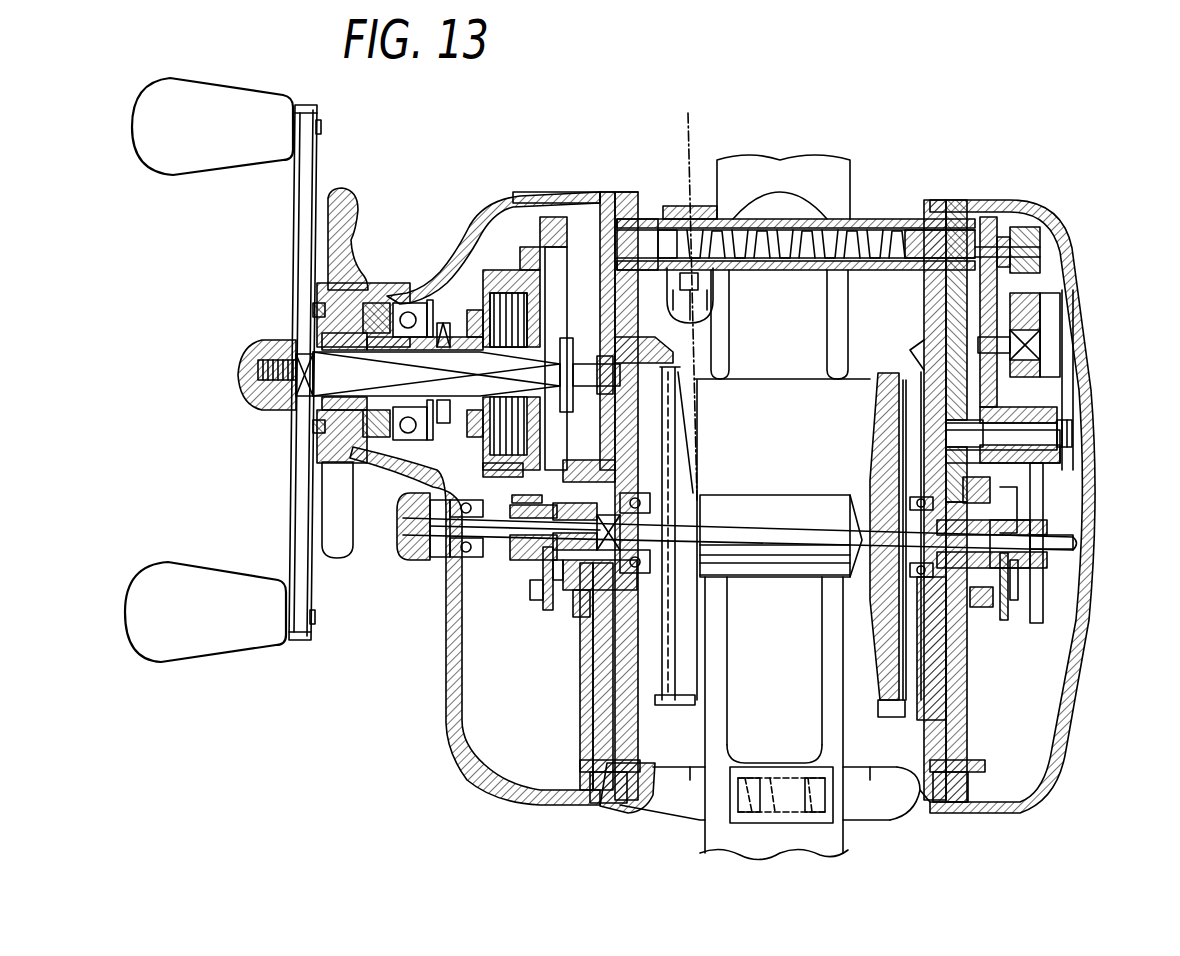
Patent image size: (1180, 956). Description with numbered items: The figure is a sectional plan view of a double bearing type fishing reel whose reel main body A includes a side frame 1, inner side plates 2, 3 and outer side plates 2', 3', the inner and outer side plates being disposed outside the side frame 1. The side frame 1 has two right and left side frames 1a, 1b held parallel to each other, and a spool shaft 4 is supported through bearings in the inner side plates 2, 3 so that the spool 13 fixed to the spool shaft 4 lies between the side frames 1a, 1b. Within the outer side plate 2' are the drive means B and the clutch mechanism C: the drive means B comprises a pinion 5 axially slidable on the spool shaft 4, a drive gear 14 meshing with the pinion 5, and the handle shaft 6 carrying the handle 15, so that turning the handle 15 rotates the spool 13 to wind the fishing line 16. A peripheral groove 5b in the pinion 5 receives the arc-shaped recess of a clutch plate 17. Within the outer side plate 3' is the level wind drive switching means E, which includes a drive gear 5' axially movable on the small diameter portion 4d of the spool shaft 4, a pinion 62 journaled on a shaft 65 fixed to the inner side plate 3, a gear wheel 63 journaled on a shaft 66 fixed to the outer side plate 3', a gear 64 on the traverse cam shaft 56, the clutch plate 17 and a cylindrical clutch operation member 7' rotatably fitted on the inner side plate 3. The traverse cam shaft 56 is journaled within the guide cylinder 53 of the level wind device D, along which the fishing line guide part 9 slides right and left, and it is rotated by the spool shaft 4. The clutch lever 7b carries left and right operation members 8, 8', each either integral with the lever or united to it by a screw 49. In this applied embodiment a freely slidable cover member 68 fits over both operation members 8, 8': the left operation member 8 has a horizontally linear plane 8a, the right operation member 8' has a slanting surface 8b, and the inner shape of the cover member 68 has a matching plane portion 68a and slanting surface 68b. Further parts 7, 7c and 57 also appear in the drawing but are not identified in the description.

The side frame 1 is at (628, 175).
The left side frame 1a is at (628, 812).
The right side frame 1b is at (926, 200).
The inner side plate 2 is at (493, 215).
The outer side plate 2' is at (555, 161).
The inner side plate 3 is at (964, 314).
The outer side plate 3' is at (1022, 488).
The spool shaft 4 is at (1070, 560).
The small diameter portion of the spool shaft 4d is at (1045, 537).
The pinion 5 is at (443, 555).
The drive gear 5' is at (1087, 559).
The peripheral groove 5b is at (1005, 508).
The handle shaft 6 is at (236, 370).
The left side plate 7 is at (556, 676).
The cylindrical clutch operation member 7' is at (1023, 652).
The clutch lever 7b is at (578, 745).
The yoke plate 7c is at (512, 575).
The operation member 8 is at (775, 832).
The operation member 8' is at (900, 832).
The plane 8a is at (707, 780).
The slanting surface 8b is at (858, 775).
The fishing line guide part 9 is at (704, 183).
The spool 13 is at (772, 510).
The drive gear 14 is at (510, 270).
The handle 15 is at (300, 214).
The fishing line 16 is at (671, 292).
The clutch plate 17 is at (542, 600).
The screw 49 is at (583, 790).
The guide cylinder 53 is at (773, 219).
The traverse cam shaft 56 is at (1040, 255).
The drag support 57 is at (1025, 228).
The pinion 62 is at (1058, 410).
The gear wheel 63 is at (1065, 385).
The gear 64 is at (989, 215).
The shaft 65 is at (1072, 435).
The shaft 66 is at (1003, 340).
The cover member 68 is at (785, 825).
The plane portion 68a is at (752, 815).
The slanting surface 68b is at (812, 815).
The reel main body A is at (604, 162).
The drive means B is at (485, 225).
The clutch mechanism C is at (500, 648).
The level wind device D is at (664, 175).
The level wind drive switching means E is at (1070, 598).